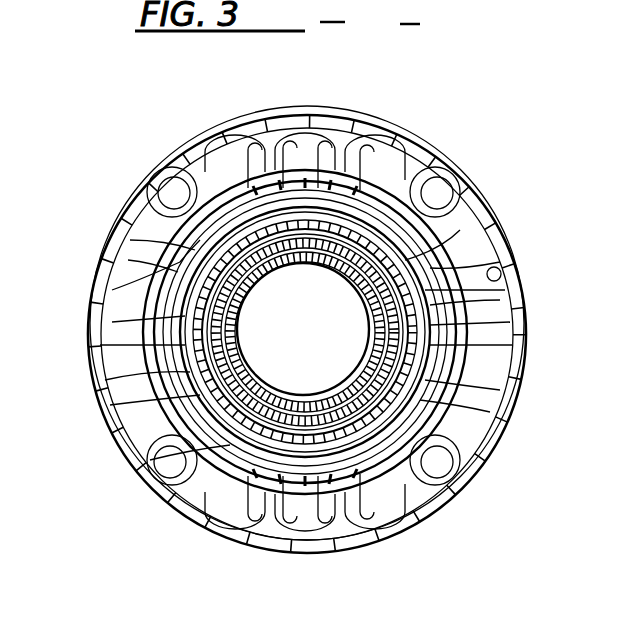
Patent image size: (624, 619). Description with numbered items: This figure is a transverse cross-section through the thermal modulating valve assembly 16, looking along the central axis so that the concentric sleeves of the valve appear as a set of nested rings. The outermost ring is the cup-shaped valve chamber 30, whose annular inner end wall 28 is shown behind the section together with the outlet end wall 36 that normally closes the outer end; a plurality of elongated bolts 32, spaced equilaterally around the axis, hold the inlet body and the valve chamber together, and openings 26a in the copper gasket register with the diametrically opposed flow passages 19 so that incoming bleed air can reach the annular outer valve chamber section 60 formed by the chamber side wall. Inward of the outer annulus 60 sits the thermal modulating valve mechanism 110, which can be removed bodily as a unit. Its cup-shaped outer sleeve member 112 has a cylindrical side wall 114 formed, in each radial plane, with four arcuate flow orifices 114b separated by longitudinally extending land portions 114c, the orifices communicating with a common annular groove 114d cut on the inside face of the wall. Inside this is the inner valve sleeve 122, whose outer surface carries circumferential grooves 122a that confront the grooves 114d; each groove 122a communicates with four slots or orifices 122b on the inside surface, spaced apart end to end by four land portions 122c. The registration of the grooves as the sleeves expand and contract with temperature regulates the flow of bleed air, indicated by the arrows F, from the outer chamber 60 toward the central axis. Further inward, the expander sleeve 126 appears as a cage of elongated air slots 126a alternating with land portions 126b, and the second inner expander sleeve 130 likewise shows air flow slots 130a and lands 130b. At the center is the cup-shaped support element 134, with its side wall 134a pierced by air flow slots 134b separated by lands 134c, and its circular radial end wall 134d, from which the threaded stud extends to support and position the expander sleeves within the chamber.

The thermal modulating valve assembly 16 is at (528, 342).
The flow passages 19 is at (378, 132).
The openings in gasket 26a is at (312, 132).
The inner end wall 28 is at (498, 342).
The valve chamber 30 is at (468, 468).
The bolts 32 is at (180, 186).
The outlet end wall 36 is at (92, 336).
The outer valve chamber section 60 is at (502, 276).
The thermal modulating valve mechanism 110 is at (145, 297).
The outer sleeve member 112 is at (490, 400).
The cylindrical side wall 114 is at (150, 430).
The flow orifices 114b is at (405, 165).
The land portions 114c is at (215, 150).
The annular grooves 114d is at (500, 318).
The inner valve sleeve 122 is at (165, 352).
The circumferential grooves 122a is at (130, 240).
The slots or orifices 122b is at (504, 430).
The land portions 122c is at (358, 278).
The expander sleeve 126 is at (420, 345).
The air slots 126a is at (272, 132).
The land portions 126b is at (350, 132).
The second inner expander sleeve 130 is at (187, 331).
The air flow slots 130a is at (500, 300).
The lands 130b is at (368, 328).
The support element 134 is at (196, 398).
The side wall 134a is at (248, 380).
The air flow slots 134b is at (335, 390).
The lands 134c is at (425, 378).
The radial end wall 134d is at (328, 283).
The bleed air flow arrows F is at (232, 140).